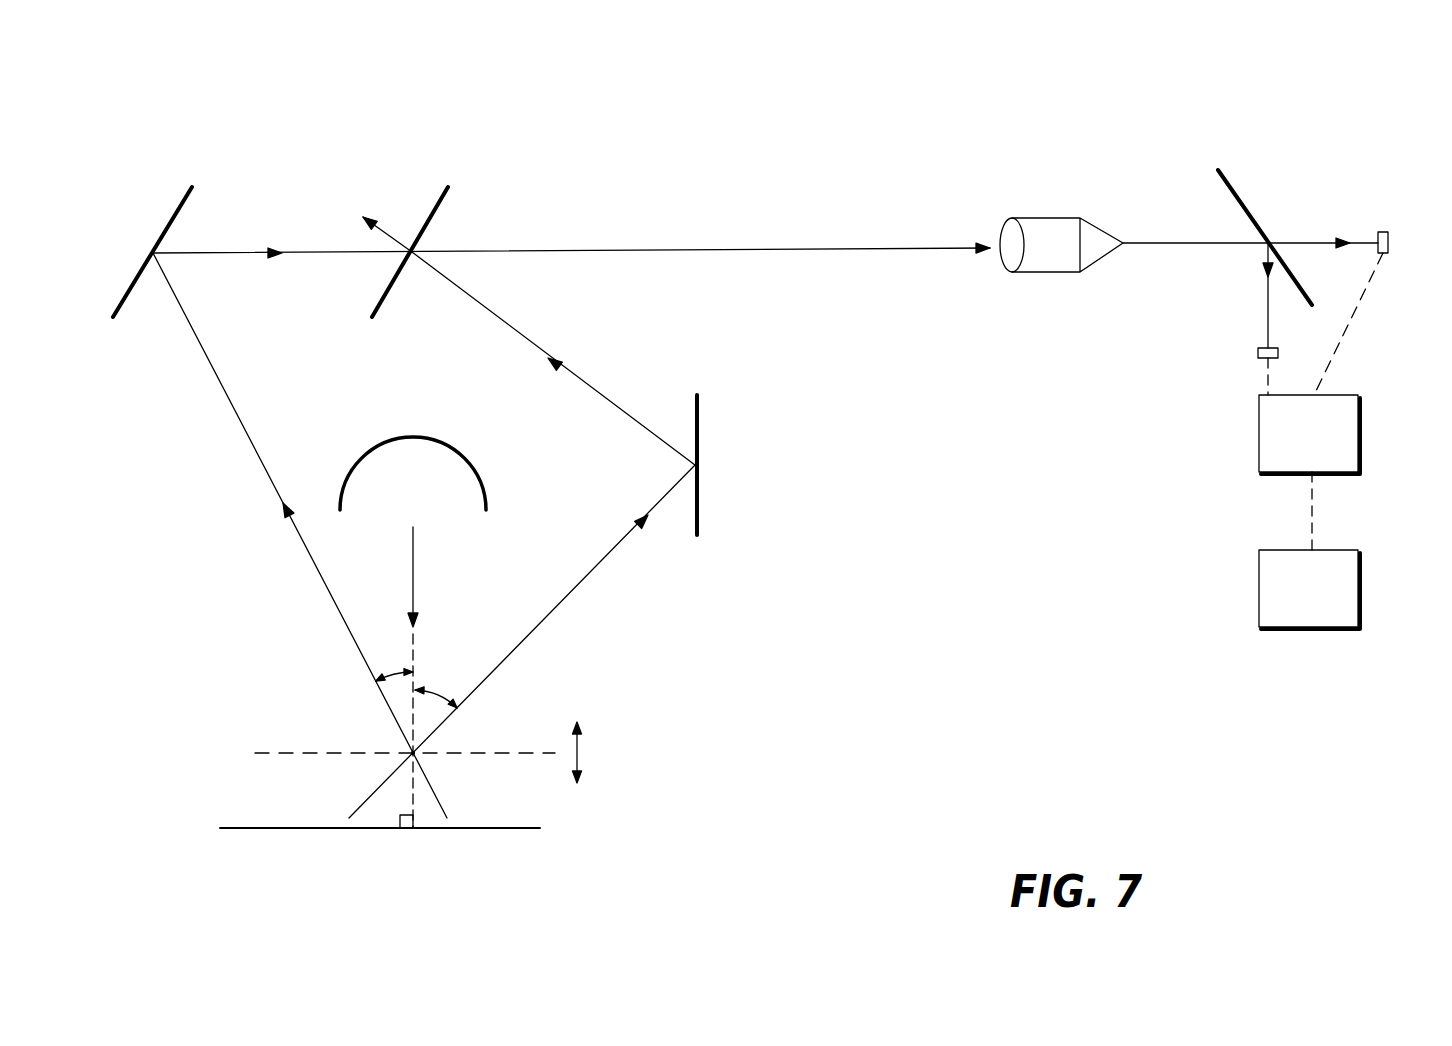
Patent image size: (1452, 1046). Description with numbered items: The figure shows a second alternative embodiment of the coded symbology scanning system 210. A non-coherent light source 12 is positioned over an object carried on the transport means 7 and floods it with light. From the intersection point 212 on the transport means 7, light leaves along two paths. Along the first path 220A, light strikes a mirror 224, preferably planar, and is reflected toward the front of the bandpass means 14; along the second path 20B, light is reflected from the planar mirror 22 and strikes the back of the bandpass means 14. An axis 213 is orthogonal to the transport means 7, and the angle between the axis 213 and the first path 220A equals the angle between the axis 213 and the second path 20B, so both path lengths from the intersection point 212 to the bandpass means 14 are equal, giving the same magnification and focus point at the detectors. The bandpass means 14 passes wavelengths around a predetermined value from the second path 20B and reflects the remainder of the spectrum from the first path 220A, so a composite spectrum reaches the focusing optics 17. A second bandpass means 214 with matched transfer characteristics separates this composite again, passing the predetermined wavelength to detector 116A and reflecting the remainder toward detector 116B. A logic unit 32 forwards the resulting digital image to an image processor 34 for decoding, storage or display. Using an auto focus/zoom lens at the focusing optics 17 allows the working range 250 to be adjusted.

The scanning system 210 is at (145, 92).
The planar mirror 22 is at (167, 220).
The bandpass means 14 is at (433, 207).
The focusing optics 17 is at (1062, 218).
The second bandpass means 214 is at (1248, 200).
The detector 116A is at (1390, 233).
The detector 116B is at (1258, 353).
The logic unit 32 is at (1358, 412).
The image processor 34 is at (1358, 557).
The light source 12 is at (463, 457).
The mirror 224 is at (697, 438).
The second path 20B is at (338, 610).
The first path 220A is at (547, 620).
The axis 213 is at (414, 650).
The intersection point 212 is at (416, 756).
The working range 250 is at (577, 757).
The transport means 7 is at (528, 828).